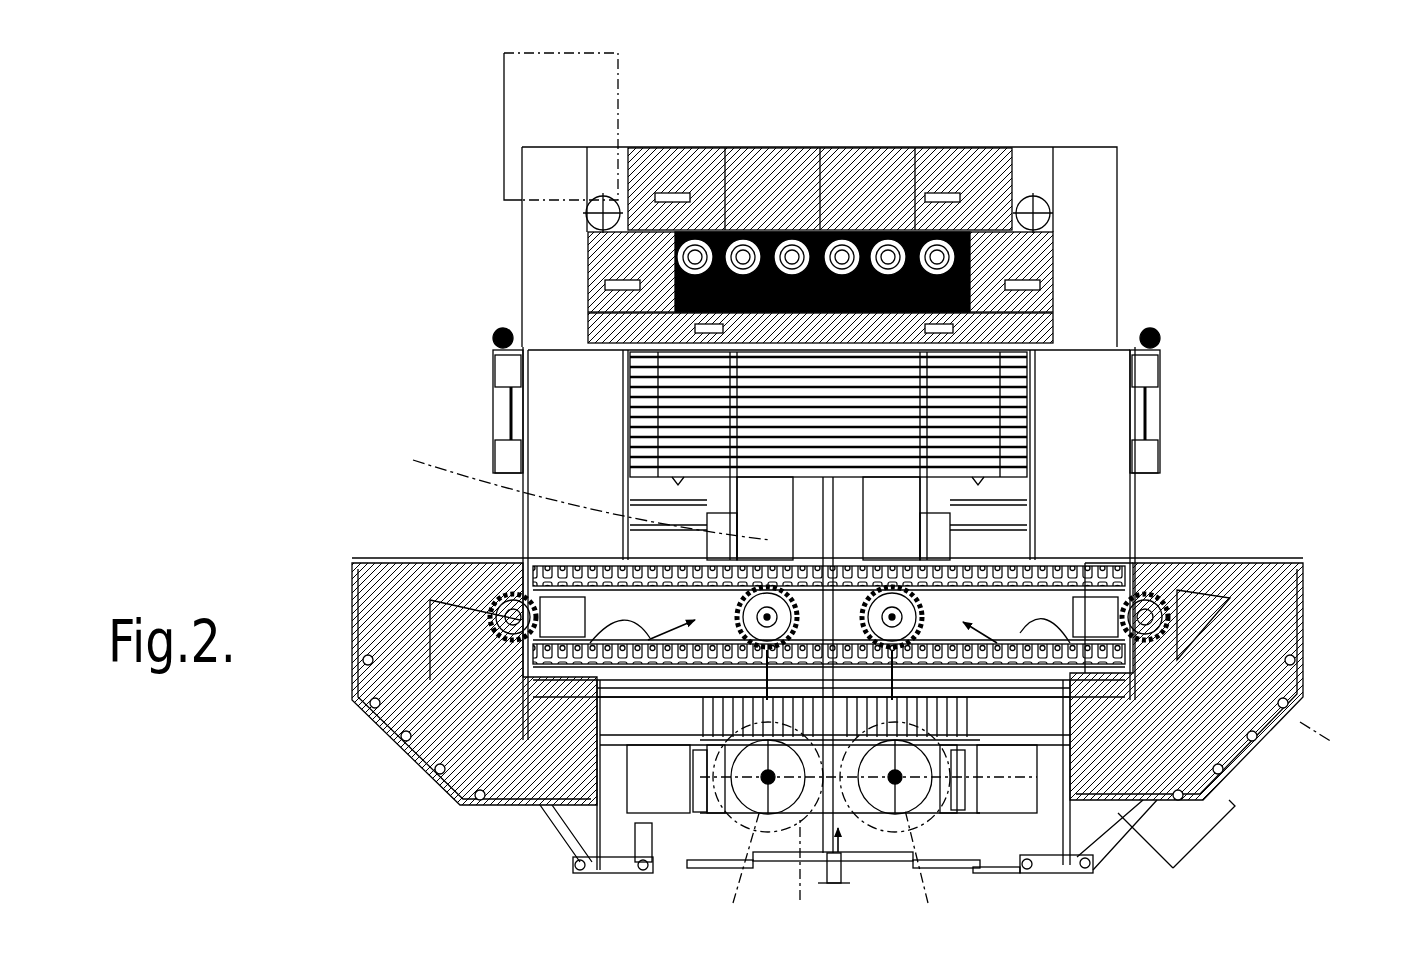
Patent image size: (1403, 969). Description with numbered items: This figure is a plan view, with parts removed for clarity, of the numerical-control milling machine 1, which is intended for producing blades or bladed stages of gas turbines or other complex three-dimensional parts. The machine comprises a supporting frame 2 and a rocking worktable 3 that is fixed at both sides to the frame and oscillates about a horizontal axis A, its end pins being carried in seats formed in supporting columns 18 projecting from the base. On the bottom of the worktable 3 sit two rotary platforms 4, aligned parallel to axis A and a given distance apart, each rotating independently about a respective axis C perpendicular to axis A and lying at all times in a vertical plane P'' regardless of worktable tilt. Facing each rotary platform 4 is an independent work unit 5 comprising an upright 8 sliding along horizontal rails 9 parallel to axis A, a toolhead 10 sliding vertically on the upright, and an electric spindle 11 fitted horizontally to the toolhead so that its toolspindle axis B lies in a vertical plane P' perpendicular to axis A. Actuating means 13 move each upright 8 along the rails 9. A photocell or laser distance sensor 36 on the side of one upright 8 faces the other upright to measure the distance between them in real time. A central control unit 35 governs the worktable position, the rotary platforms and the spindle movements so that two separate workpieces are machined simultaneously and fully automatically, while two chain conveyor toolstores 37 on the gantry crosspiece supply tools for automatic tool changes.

The numerical-control milling machine 1 is at (700, 454).
The supporting frame 2 is at (1125, 191).
The rocking worktable 3 is at (841, 852).
The rotary platforms 4 is at (745, 800).
The work units 5 is at (470, 740).
The upright 8 is at (713, 547).
The horizontal rails 9 is at (682, 525).
The toolhead 10 is at (770, 493).
The electric spindle 11 is at (755, 667).
The actuating means 13 is at (450, 675).
The supporting column 18 is at (650, 873).
The central control unit 35 is at (1193, 833).
The laser distance sensor 36 is at (823, 560).
The chain conveyor toolstores 37 is at (500, 590).
The horizontal axis of rotation A is at (980, 623).
The axis of rotation of the toolspindle B is at (885, 597).
The axis of rotation of rotary platform C is at (832, 876).
The vertical plane P is at (807, 879).